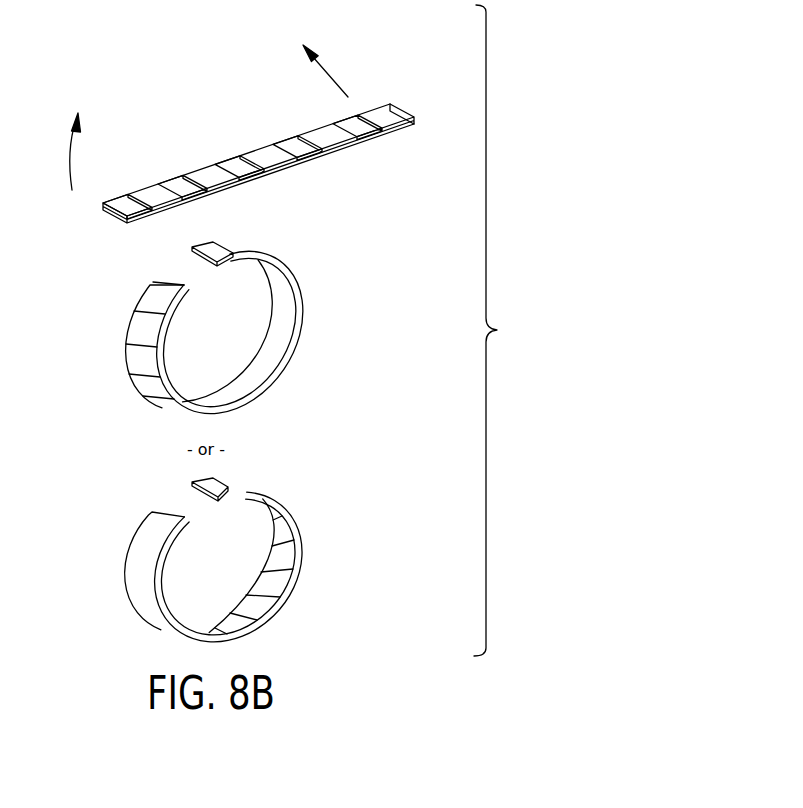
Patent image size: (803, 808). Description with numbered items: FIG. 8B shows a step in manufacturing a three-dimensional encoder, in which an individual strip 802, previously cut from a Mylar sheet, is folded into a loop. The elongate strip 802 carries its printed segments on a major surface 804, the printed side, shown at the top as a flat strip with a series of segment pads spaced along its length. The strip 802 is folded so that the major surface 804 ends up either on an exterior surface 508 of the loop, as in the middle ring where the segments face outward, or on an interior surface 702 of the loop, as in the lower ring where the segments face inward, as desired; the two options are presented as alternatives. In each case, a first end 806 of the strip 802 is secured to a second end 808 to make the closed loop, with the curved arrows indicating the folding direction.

The strip 802 is at (330, 135).
The major surface 804 is at (262, 160).
The first end 806 is at (102, 214).
The second end 808 is at (392, 115).
The exterior surface 508 is at (148, 312).
The interior surface 702 is at (273, 585).